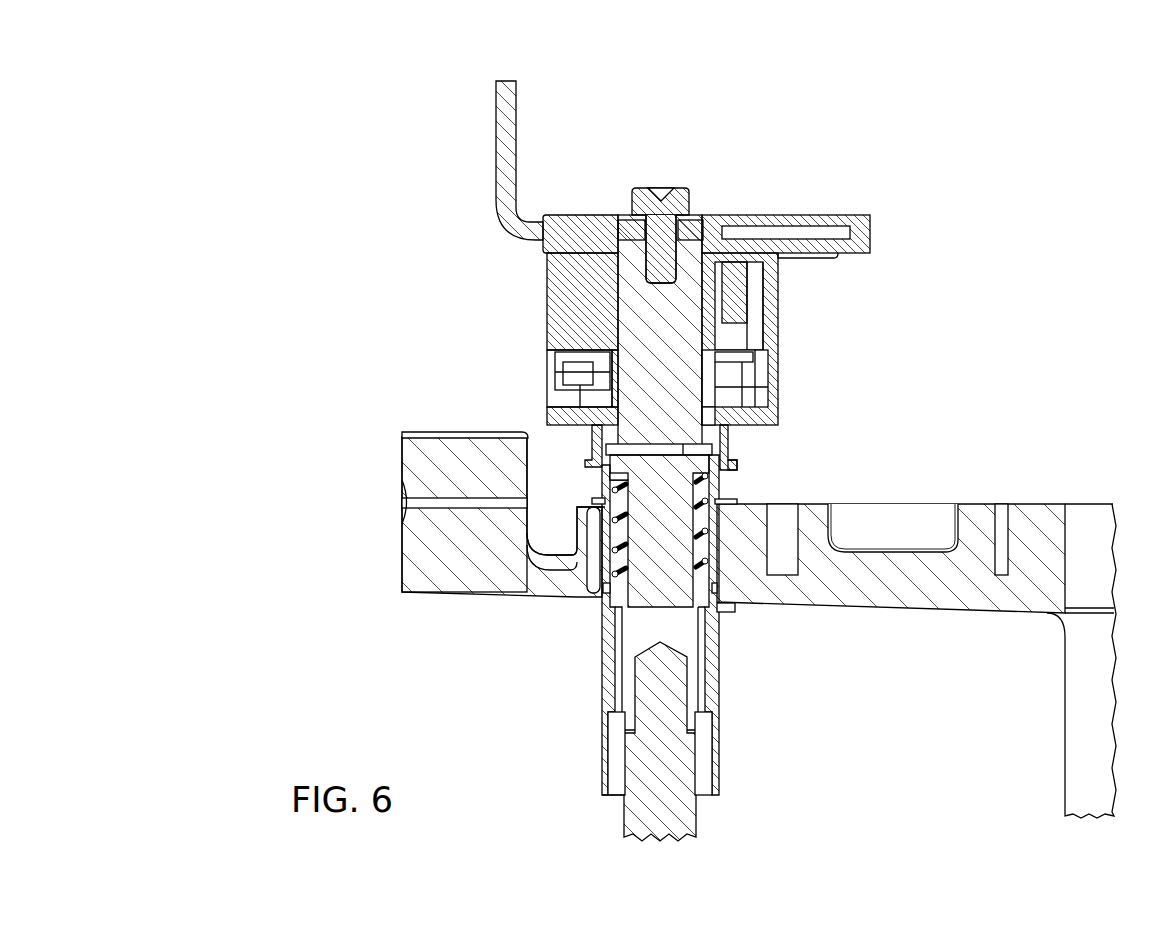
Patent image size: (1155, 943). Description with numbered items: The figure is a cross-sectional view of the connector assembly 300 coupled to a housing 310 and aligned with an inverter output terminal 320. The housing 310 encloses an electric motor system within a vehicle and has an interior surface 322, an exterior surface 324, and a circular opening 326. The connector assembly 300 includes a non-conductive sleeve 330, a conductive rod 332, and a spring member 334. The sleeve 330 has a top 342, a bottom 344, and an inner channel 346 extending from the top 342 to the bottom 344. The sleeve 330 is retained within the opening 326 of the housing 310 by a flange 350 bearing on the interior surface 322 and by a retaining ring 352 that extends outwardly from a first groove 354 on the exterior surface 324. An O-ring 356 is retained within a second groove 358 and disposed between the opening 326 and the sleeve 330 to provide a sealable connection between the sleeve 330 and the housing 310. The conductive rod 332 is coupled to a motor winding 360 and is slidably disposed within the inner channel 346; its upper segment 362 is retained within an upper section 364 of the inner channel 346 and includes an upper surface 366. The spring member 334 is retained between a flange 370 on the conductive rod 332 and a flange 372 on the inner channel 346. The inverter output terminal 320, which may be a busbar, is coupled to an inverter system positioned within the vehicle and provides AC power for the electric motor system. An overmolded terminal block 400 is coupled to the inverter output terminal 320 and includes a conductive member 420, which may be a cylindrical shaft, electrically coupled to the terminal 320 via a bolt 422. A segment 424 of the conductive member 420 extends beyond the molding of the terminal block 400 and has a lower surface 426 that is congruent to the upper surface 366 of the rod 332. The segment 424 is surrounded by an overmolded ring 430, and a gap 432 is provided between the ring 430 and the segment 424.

The connector assembly 300 is at (730, 461).
The housing 310 is at (418, 465).
The inverter output terminal 320 is at (496, 89).
The interior surface 322 is at (435, 597).
The exterior surface 324 is at (407, 432).
The circular opening 326 is at (530, 546).
The non-conductive sleeve 330 is at (720, 775).
The conductive rod 332 is at (682, 569).
The spring member 334 is at (703, 565).
The top 342 is at (610, 440).
The bottom 344 is at (605, 795).
The inner channel 346 is at (610, 778).
The flange 350 is at (735, 608).
The retaining ring 352 is at (722, 504).
The first groove 354 is at (720, 500).
The O-ring 356 is at (770, 578).
The second groove 358 is at (716, 594).
The motor winding 360 is at (682, 799).
The upper segment 362 is at (723, 467).
The upper section 364 is at (712, 548).
The upper surface 366 is at (607, 471).
The flange 370 is at (693, 480).
The flange 372 is at (608, 593).
The overmolded terminal block 400 is at (558, 267).
The conductive member 420 is at (682, 324).
The bolt 422 is at (661, 188).
The segment 424 is at (716, 445).
The lower surface 426 is at (683, 455).
The overmolded ring 430 is at (593, 448).
The gap 432 is at (607, 420).